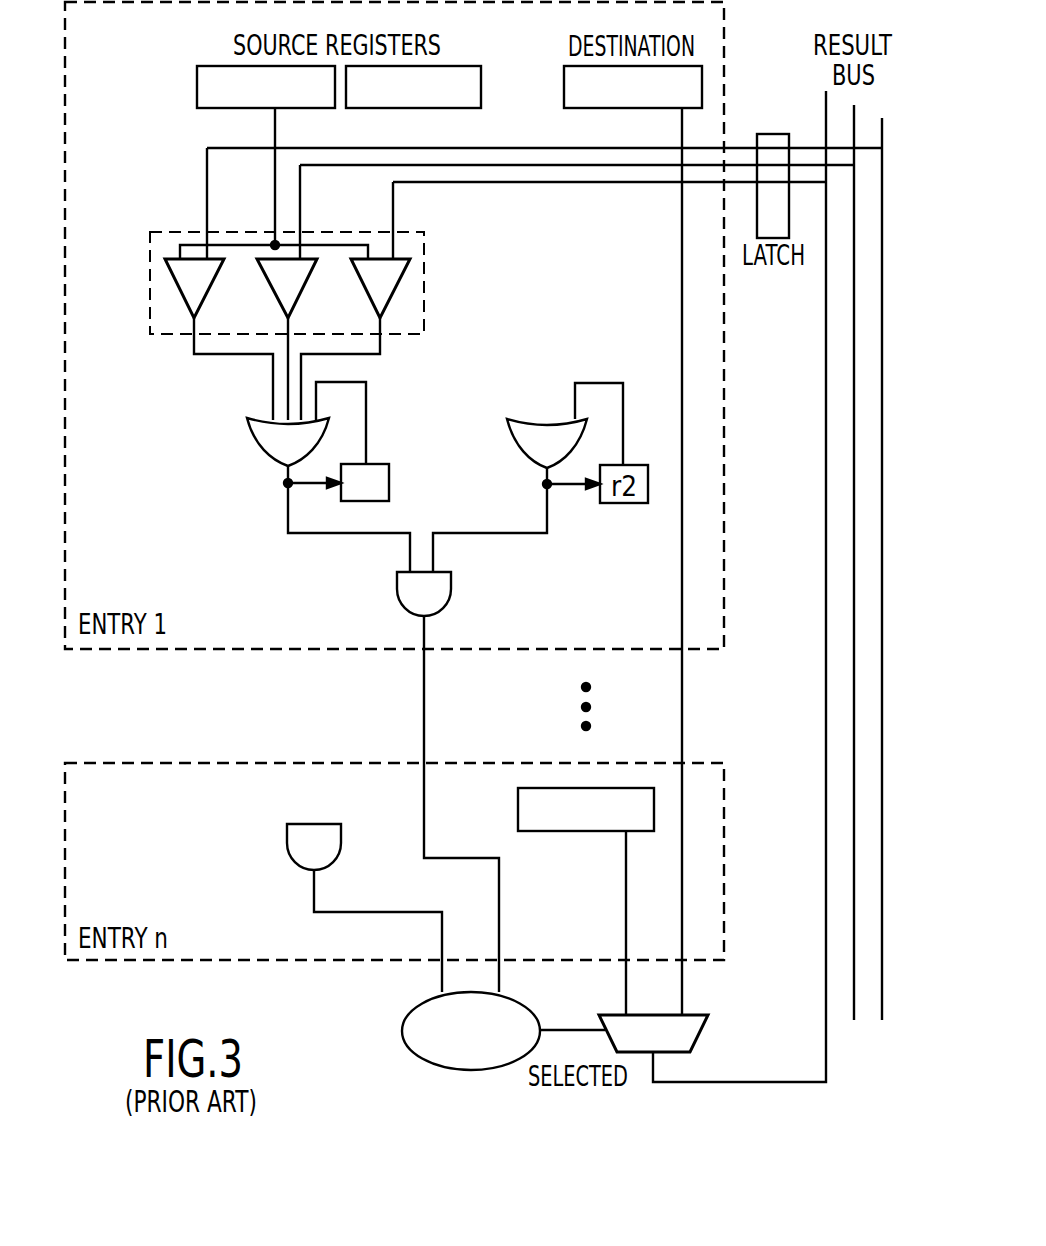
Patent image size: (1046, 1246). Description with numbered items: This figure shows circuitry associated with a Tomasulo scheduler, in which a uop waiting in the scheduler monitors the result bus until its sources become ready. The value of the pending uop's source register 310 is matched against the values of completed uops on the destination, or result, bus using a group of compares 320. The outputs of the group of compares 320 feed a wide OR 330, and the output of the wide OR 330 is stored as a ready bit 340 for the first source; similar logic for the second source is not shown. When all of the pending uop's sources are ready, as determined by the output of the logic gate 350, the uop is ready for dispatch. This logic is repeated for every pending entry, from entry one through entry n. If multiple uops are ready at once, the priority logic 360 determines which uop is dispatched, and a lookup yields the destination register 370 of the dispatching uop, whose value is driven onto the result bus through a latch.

The source register 310 is at (197, 86).
The group of compares 320 is at (424, 283).
The wide OR 330 is at (257, 445).
The ready bit 340 is at (371, 462).
The logic gate 350 is at (397, 595).
The priority logic 360 is at (406, 1047).
The destination register 370 is at (564, 86).